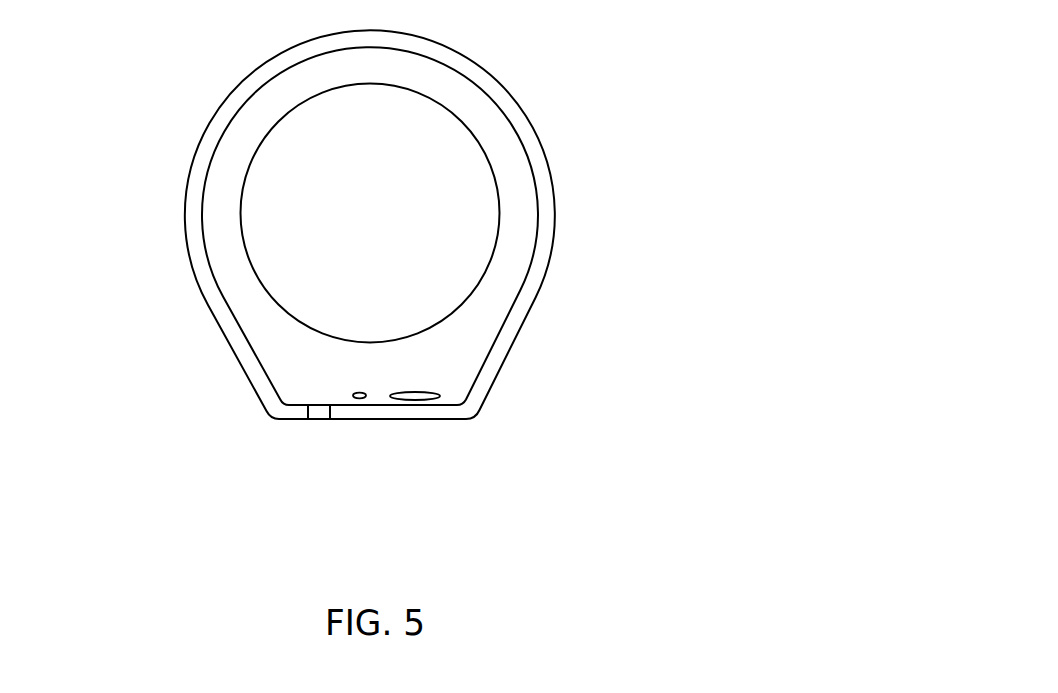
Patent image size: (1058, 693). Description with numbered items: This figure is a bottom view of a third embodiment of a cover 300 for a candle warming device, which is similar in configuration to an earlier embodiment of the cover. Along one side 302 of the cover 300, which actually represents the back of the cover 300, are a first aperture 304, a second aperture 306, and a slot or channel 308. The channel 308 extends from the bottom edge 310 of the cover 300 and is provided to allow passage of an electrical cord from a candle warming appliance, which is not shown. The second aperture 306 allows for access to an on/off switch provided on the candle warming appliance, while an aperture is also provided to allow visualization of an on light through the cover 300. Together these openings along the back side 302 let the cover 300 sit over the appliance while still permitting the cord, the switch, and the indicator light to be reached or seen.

The cover 300 is at (497, 286).
The side 302 is at (418, 421).
The first aperture 304 is at (354, 390).
The second aperture 306 is at (437, 393).
The slot or channel 308 is at (322, 421).
The bottom edge 310 is at (267, 408).